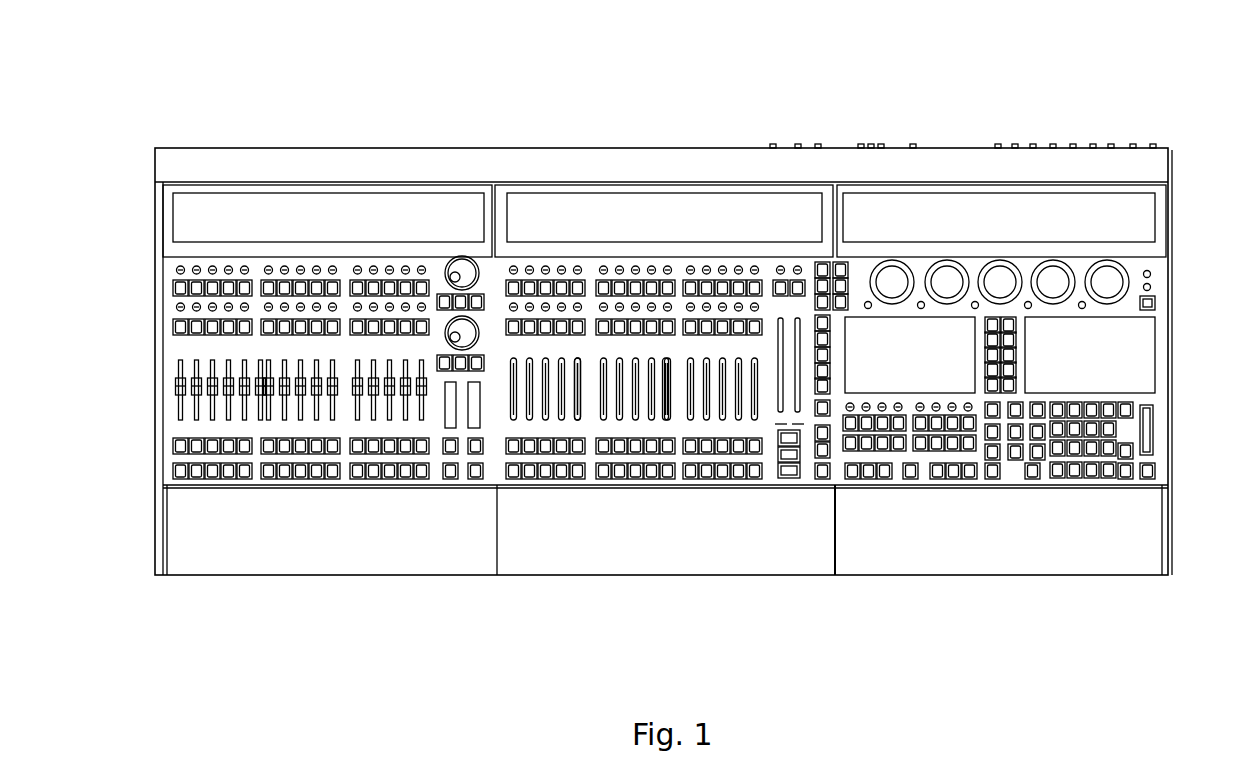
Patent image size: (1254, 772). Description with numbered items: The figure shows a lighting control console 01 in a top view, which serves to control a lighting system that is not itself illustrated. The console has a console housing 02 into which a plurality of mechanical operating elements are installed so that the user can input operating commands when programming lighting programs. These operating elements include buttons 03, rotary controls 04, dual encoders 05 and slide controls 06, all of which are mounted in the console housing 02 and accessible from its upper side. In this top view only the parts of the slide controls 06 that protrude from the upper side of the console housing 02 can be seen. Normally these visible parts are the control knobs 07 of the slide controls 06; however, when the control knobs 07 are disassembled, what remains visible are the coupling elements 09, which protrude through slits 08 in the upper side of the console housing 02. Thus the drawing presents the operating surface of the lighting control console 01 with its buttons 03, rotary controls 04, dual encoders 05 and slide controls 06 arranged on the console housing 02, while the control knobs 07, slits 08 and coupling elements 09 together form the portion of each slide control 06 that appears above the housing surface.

The lighting control console 01 is at (1068, 75).
The console housing 02 is at (160, 357).
The buttons 03 is at (175, 288).
The rotary controls 04 is at (455, 262).
The dual encoders 05 is at (1128, 272).
The slide controls 06 is at (508, 370).
The control knobs 07 is at (178, 395).
The slits 08 is at (578, 364).
The coupling elements 09 is at (670, 362).